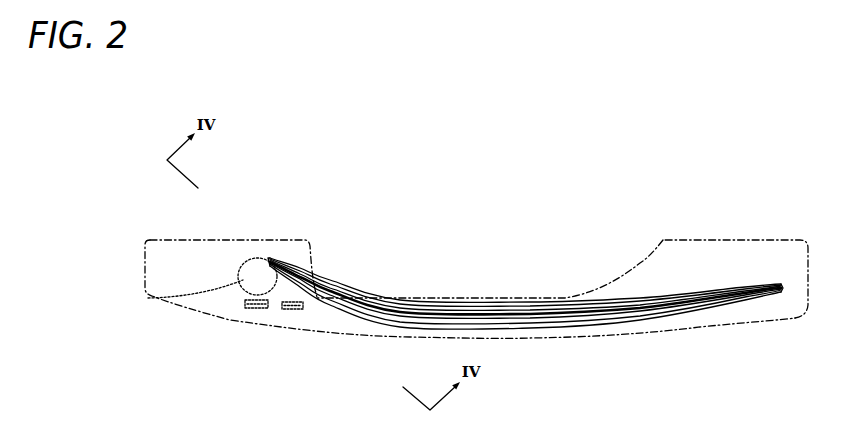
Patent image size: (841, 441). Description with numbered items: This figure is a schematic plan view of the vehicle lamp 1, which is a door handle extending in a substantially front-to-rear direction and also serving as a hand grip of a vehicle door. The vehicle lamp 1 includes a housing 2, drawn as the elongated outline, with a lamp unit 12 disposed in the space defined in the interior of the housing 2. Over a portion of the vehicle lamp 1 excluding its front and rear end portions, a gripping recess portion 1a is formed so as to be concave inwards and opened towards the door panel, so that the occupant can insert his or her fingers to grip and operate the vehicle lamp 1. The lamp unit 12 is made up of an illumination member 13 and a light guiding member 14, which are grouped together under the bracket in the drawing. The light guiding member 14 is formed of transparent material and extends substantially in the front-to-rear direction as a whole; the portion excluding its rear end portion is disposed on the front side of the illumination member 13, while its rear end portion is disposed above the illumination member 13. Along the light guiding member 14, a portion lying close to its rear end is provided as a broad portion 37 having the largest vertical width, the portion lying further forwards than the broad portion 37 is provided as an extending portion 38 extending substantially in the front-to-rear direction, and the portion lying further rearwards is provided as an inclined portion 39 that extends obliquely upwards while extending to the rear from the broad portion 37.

The vehicle lamp 1 is at (110, 115).
The gripping recess portion 1a is at (483, 298).
The housing 2 is at (666, 240).
The lamp unit 12 is at (507, 214).
The illumination member 13 is at (245, 258).
The light guiding member 14 is at (313, 297).
The broad portion 37 is at (343, 310).
The extending portion 38 is at (532, 325).
The inclined portion 39 is at (243, 292).